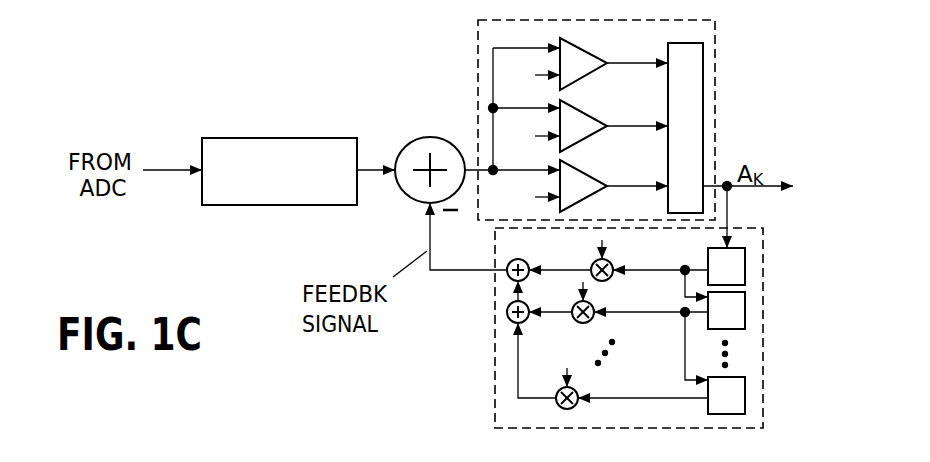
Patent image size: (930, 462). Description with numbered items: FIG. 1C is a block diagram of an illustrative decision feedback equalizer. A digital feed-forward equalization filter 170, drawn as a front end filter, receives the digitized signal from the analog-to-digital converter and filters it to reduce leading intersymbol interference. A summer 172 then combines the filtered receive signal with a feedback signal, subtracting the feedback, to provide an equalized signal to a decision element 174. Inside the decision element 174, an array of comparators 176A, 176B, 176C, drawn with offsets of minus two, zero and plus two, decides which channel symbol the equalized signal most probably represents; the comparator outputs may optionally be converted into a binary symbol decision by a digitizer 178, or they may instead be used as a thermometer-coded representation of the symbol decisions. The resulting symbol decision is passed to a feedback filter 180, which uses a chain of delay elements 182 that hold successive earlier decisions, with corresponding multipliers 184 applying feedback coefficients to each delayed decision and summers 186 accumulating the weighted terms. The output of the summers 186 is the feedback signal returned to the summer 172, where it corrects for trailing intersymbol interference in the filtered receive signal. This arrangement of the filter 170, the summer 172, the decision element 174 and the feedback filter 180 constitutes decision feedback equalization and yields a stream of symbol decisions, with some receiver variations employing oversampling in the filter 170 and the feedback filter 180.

The feed-forward equalization filter 170 is at (260, 208).
The summer 172 is at (410, 198).
The decision element 174 is at (477, 80).
The comparator 176A is at (591, 179).
The comparator 176B is at (591, 119).
The comparator 176C is at (591, 56).
The digitizer 178 is at (667, 201).
The feedback filter 180 is at (494, 402).
The delay elements 182 is at (746, 265).
The multipliers 184 is at (607, 277).
The summers 186 is at (500, 279).